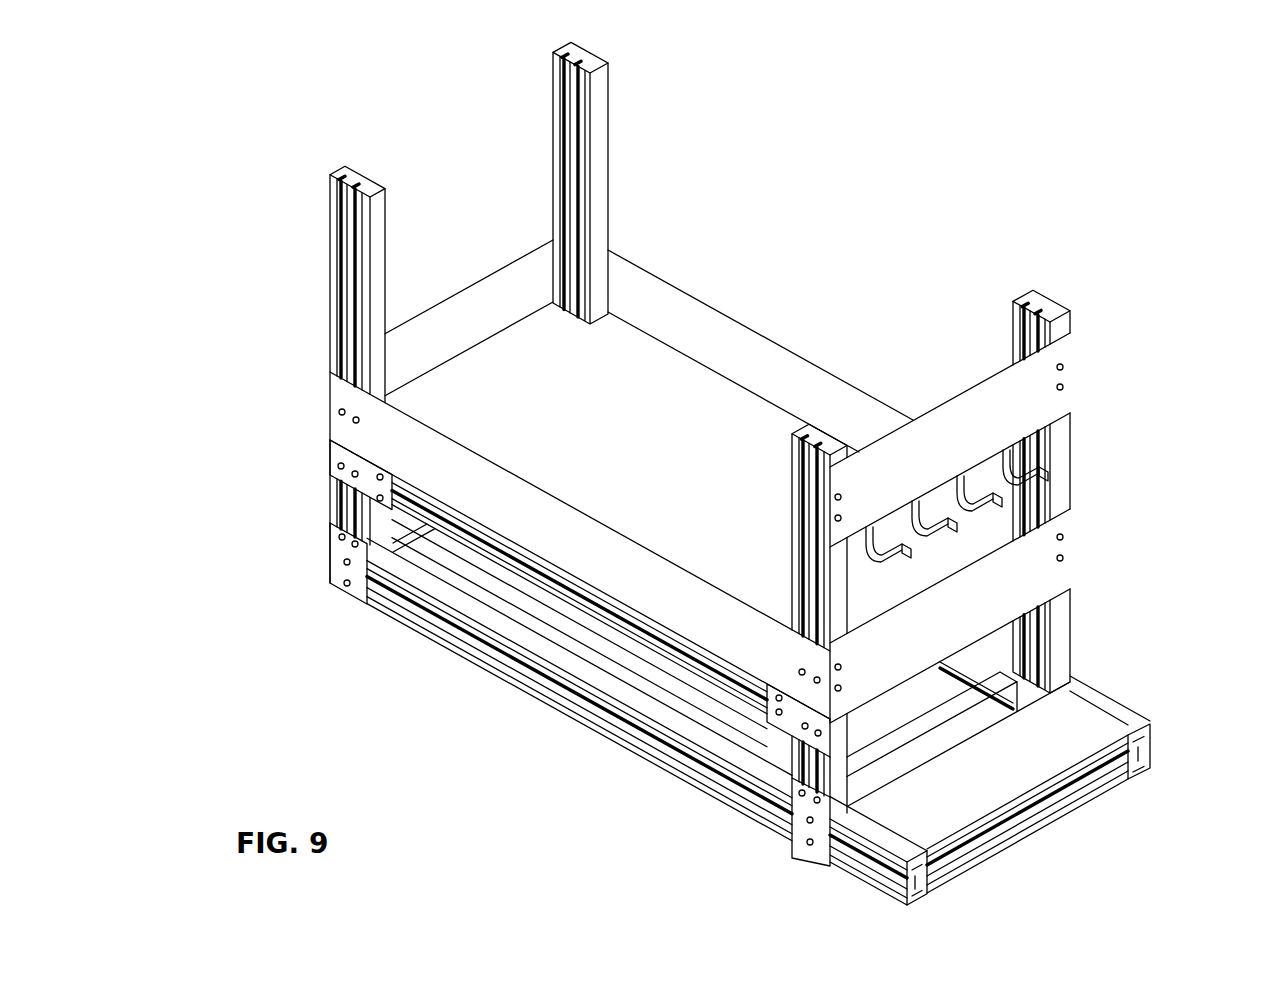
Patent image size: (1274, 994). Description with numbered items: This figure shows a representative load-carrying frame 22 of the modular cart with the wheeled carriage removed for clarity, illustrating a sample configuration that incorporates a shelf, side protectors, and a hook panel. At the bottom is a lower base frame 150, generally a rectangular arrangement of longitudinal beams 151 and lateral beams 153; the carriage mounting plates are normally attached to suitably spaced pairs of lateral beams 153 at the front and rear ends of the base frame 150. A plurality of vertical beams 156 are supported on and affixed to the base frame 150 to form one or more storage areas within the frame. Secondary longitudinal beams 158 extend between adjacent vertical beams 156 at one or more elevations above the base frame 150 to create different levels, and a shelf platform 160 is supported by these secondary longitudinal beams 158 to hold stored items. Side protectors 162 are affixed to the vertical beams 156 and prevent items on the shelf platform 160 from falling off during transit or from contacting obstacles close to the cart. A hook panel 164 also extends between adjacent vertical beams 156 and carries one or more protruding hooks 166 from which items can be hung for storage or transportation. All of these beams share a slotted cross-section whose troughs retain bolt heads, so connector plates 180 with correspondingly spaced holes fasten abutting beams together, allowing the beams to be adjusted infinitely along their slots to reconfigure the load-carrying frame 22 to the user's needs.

The load-carrying frame 22 is at (1197, 293).
The lower base frame 150 is at (535, 710).
The longitudinal beams 151 is at (460, 655).
The lateral beams 153 is at (473, 583).
The vertical beams 156 is at (608, 136).
The secondary longitudinal beams 158 is at (658, 747).
The shelf platform 160 is at (604, 426).
The side protectors 162 is at (505, 265).
The hook panel 164 is at (987, 381).
The hooks 166 is at (913, 547).
The connector plate 180 is at (345, 480).